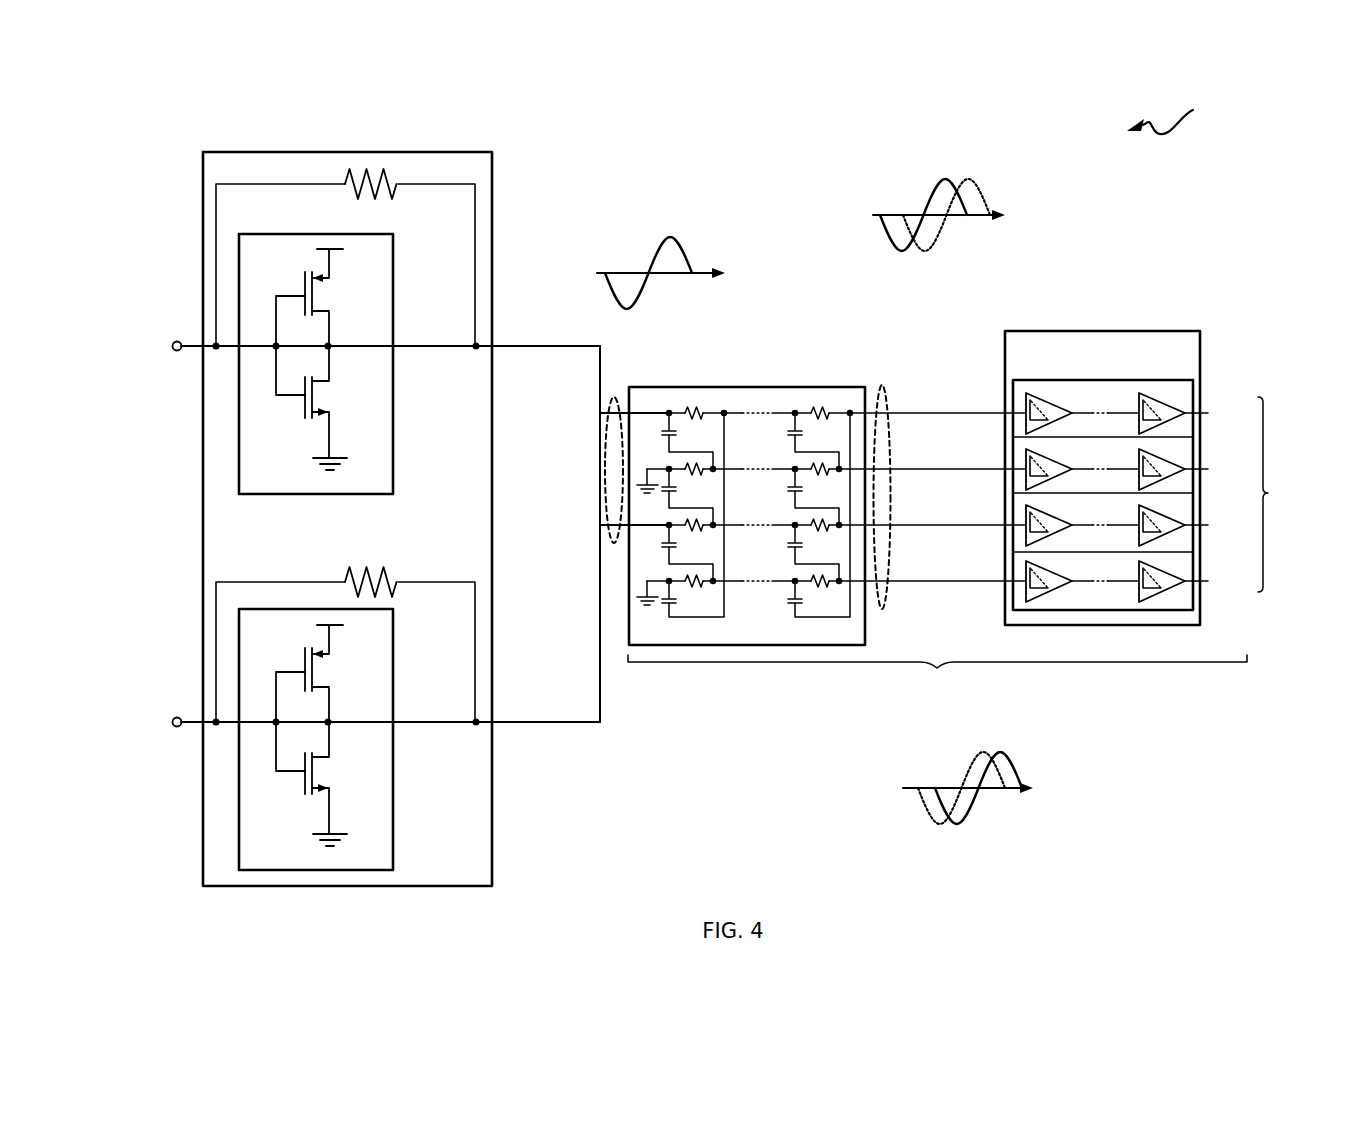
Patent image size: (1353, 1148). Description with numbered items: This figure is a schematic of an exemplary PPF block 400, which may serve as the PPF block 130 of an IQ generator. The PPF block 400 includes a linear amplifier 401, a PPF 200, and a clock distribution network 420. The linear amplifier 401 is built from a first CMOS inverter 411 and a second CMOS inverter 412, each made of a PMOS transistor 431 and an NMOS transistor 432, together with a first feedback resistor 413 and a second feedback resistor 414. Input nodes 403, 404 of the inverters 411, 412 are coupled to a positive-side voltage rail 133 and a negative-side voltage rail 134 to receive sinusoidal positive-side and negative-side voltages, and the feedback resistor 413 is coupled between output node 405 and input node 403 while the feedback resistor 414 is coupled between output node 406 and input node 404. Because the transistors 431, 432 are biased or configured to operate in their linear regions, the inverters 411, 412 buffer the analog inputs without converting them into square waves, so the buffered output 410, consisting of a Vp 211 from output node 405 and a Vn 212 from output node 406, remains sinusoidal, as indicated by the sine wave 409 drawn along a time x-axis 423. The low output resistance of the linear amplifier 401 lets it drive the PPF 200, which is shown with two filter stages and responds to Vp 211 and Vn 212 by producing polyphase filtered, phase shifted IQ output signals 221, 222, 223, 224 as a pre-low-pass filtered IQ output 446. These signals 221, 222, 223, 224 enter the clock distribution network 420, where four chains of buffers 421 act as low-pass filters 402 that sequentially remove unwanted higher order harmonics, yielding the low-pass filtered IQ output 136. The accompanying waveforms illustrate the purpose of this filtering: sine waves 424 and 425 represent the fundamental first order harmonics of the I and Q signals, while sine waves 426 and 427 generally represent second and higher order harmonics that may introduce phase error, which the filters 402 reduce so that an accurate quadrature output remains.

The PPF block 400 is at (1182, 112).
The linear amplifier 401 is at (493, 152).
The low-pass filter 402 is at (1093, 380).
The input node 403 is at (212, 350).
The input node 404 is at (205, 718).
The output node 405 is at (475, 340).
The output node 406 is at (475, 716).
The sine wave 409 is at (695, 260).
The buffered output 410 is at (615, 397).
The first CMOS inverter 411 is at (395, 478).
The second CMOS inverter 412 is at (395, 853).
The first feedback resistor 413 is at (398, 186).
The second feedback resistor 414 is at (398, 586).
The clock distribution network 420 is at (1073, 331).
The buffer 421 is at (1047, 394).
The time x-axis 423 is at (728, 278).
The sine wave 424 is at (950, 180).
The sine wave 425 is at (972, 828).
The sine wave 426 is at (938, 253).
The sine wave 427 is at (967, 775).
The PMOS transistor 431 is at (326, 282).
The NMOS transistor 432 is at (330, 412).
The pre-low-pass filtered IQ output 446 is at (885, 385).
The PPF block 130 is at (937, 677).
The positive-side voltage rail 133 is at (175, 340).
The negative-side voltage rail 134 is at (175, 730).
The IQ output 136 is at (1284, 494).
The PPF 200 is at (740, 387).
The Vp 211 is at (600, 413).
The Vn 212 is at (600, 527).
The IQ output signal 221 is at (900, 413).
The IQ output signal 222 is at (900, 469).
The IQ output signal 223 is at (900, 525).
The IQ output signal 224 is at (900, 581).